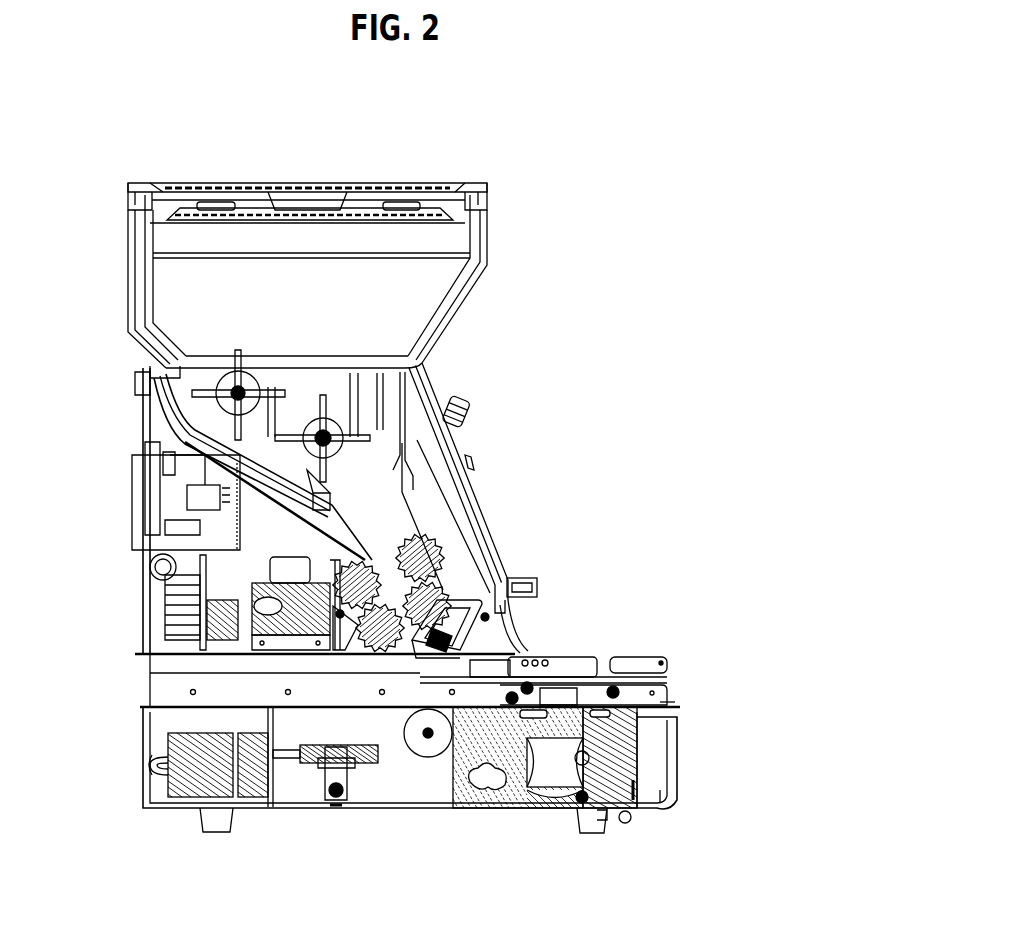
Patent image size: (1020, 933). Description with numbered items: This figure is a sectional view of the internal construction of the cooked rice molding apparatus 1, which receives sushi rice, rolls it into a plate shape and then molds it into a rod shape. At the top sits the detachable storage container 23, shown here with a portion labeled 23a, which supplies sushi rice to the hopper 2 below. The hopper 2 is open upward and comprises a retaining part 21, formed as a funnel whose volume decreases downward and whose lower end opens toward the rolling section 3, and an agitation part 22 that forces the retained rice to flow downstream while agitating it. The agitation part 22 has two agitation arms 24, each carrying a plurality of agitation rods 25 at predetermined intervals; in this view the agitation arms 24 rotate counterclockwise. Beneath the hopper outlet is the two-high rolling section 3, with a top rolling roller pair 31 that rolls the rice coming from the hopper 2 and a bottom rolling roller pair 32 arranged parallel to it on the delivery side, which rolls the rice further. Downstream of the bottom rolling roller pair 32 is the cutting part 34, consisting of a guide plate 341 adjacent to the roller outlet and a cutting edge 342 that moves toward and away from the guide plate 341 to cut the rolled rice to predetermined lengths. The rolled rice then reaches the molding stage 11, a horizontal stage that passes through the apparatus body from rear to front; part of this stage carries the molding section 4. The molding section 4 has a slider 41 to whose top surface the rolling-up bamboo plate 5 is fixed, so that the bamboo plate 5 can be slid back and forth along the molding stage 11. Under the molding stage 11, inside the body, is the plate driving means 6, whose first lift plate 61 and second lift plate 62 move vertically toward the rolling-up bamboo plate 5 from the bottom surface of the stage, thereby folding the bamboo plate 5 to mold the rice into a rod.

The cooked rice molding apparatus 1 is at (618, 364).
The hopper 2 is at (432, 357).
The rolling section 3 is at (558, 505).
The molding section 4 is at (752, 678).
The rolling-up bamboo plate 5 is at (484, 415).
The plate driving means 6 is at (655, 752).
The molding stage 11 is at (176, 707).
The retaining part 21 is at (136, 350).
The agitation part 22 is at (332, 294).
The storage container 23 is at (128, 244).
The lid top plate 23a is at (346, 183).
The agitation arm 24 is at (266, 360).
The agitation rod 25 is at (240, 362).
The top rolling roller pair 31 is at (442, 538).
The bottom rolling roller pair 32 is at (458, 585).
The cutting part 34 is at (596, 585).
The guide plate 341 is at (455, 605).
The cutting edge 342 is at (455, 640).
The slider 41 is at (642, 690).
The first lift plate 61 is at (625, 775).
The second lift plate 62 is at (480, 803).